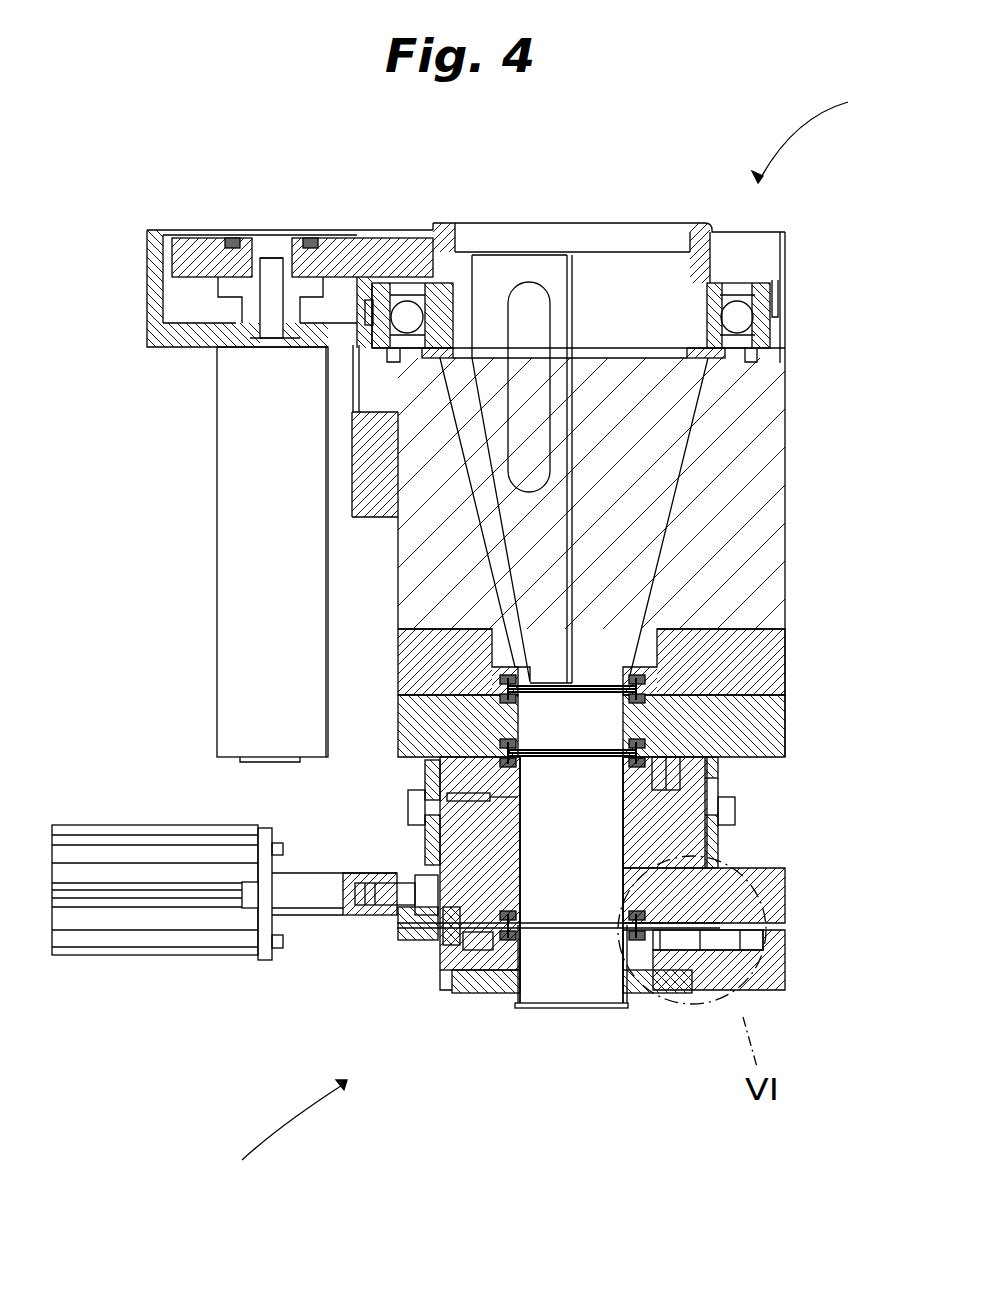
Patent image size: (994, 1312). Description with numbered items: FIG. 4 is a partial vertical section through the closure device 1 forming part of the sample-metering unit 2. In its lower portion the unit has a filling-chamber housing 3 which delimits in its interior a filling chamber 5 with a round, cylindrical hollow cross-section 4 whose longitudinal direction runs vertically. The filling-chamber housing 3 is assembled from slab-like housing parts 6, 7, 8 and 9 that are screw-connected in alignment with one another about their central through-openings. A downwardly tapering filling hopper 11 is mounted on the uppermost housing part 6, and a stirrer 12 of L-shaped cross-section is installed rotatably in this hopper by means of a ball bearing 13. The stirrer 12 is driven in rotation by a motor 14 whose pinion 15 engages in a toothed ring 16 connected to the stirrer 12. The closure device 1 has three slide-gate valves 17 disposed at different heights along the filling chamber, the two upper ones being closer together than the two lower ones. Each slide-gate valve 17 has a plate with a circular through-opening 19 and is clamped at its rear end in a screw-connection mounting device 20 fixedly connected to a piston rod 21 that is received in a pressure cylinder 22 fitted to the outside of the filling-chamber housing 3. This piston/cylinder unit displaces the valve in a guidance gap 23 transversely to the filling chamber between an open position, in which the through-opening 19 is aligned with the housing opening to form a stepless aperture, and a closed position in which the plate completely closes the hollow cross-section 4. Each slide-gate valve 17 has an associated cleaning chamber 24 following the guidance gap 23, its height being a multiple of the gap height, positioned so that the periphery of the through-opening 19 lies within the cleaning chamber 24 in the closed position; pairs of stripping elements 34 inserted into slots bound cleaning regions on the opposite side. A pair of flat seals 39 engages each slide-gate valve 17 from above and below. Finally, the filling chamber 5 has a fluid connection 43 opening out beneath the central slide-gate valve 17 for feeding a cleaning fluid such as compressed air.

The closure device 1 is at (284, 1133).
The sample-metering unit 2 is at (810, 130).
The filling-chamber housing 3 is at (775, 742).
The hollow cross-section 4 is at (575, 1008).
The filling chamber 5 is at (575, 1008).
The housing part 6 is at (765, 640).
The housing part 7 is at (770, 705).
The housing part 8 is at (772, 890).
The housing part 9 is at (780, 970).
The filling hopper 11 is at (765, 472).
The stirrer 12 is at (498, 272).
The ball bearing 13 is at (770, 333).
The motor 14 is at (250, 606).
The pinion 15 is at (346, 250).
The toothed ring 16 is at (398, 250).
The slide-gate valve 17 is at (625, 697).
The through-opening 19 is at (517, 690).
The screw-connection mounting device 20 is at (397, 910).
The piston rod 21 is at (333, 883).
The pressure cylinder 22 is at (122, 850).
The guidance gap 23 is at (640, 690).
The cleaning chamber 24 is at (725, 940).
The stripping element 34 is at (445, 935).
The flat seal 39 is at (433, 873).
The fluid connection 43 is at (447, 797).